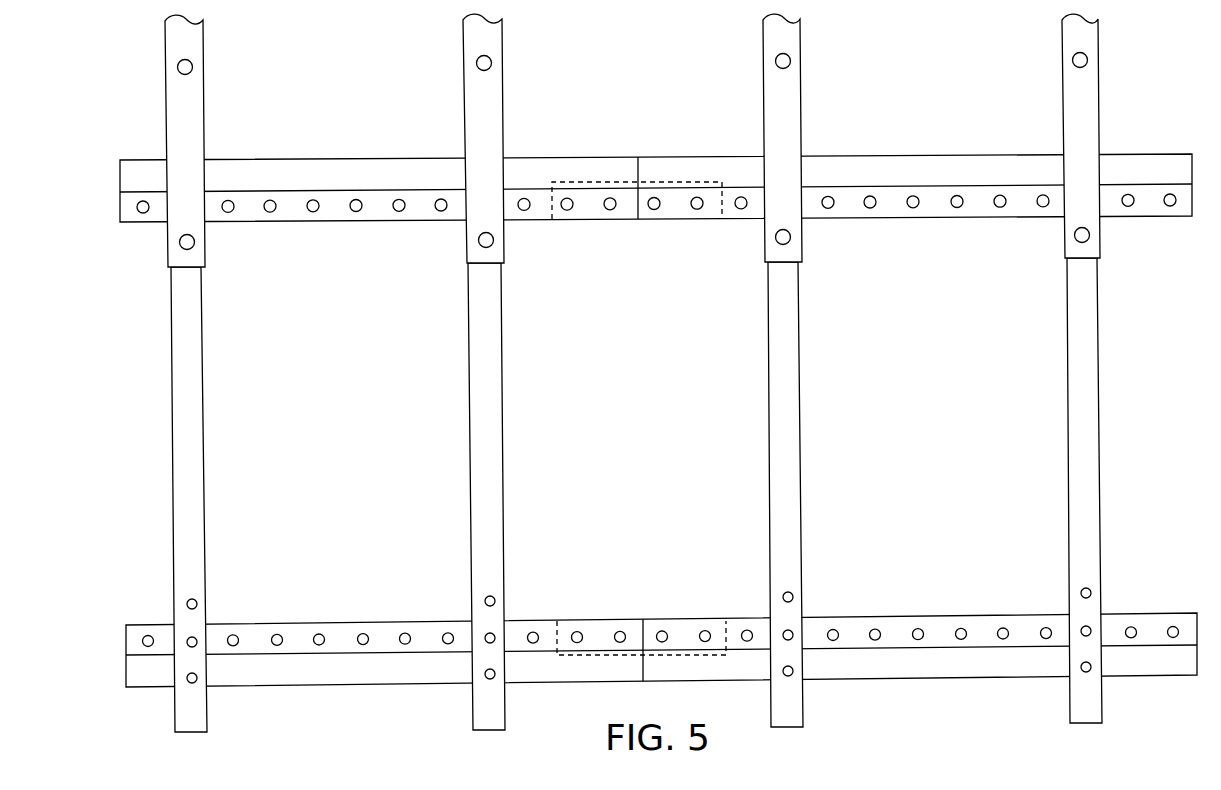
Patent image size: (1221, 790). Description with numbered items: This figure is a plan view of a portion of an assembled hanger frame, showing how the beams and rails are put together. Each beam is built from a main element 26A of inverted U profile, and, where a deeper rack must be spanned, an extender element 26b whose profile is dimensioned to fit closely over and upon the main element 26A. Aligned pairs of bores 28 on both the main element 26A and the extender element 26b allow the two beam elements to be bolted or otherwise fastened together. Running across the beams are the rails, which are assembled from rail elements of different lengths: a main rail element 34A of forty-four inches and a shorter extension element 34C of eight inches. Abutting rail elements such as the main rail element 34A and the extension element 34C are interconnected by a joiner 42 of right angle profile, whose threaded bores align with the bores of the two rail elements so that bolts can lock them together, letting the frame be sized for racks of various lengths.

The rail extension element 34C is at (325, 159).
The main rail element 34A is at (893, 154).
The extender element 26b is at (504, 124).
The main element 26A is at (504, 461).
The bores 28 is at (492, 62).
The joiner 42 is at (592, 210).